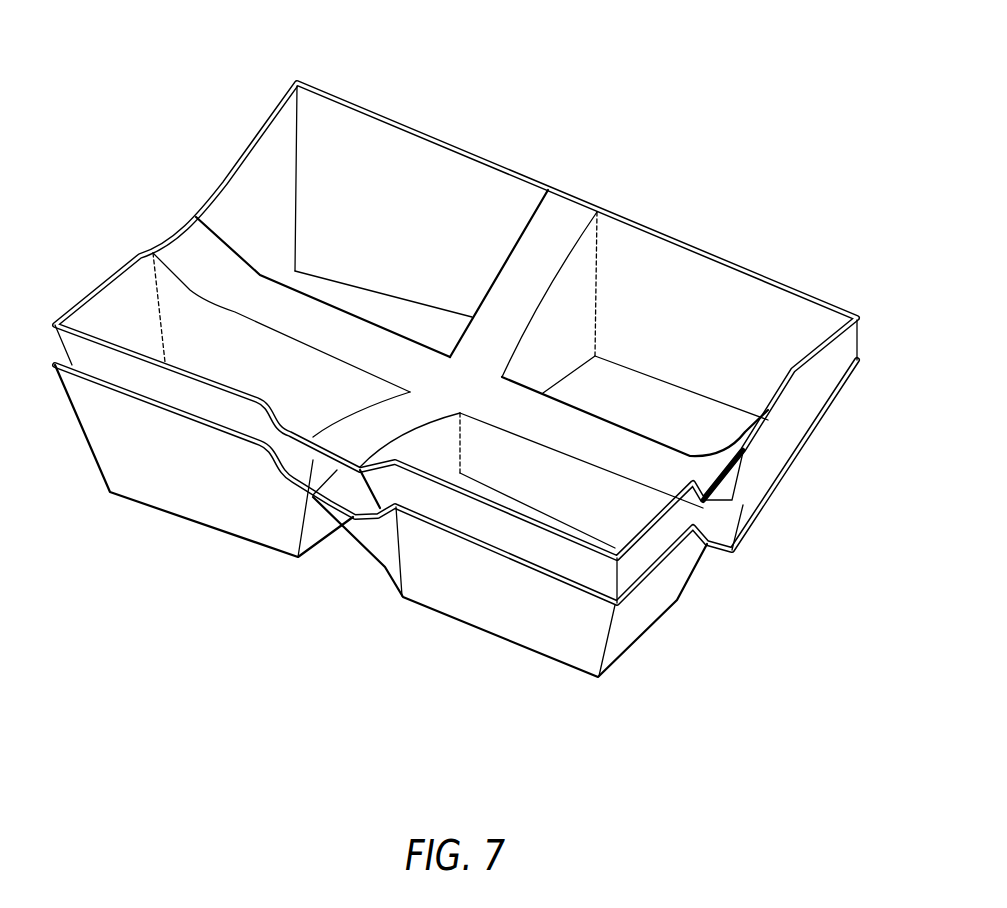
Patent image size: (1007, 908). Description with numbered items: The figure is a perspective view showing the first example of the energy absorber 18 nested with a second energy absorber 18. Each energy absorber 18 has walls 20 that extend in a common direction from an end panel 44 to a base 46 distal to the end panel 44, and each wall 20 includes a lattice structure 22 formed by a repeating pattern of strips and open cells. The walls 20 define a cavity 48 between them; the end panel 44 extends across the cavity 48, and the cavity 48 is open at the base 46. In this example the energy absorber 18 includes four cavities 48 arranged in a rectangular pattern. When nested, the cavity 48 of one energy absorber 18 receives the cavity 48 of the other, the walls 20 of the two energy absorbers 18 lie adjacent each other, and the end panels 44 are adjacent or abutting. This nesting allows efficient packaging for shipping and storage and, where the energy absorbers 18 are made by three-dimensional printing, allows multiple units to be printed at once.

The energy absorber 18 is at (486, 369).
The wall 20 is at (257, 177).
The lattice structure 22 is at (450, 190).
The end panel 44 is at (360, 303).
The base 46 is at (268, 116).
The cavity 48 is at (277, 227).